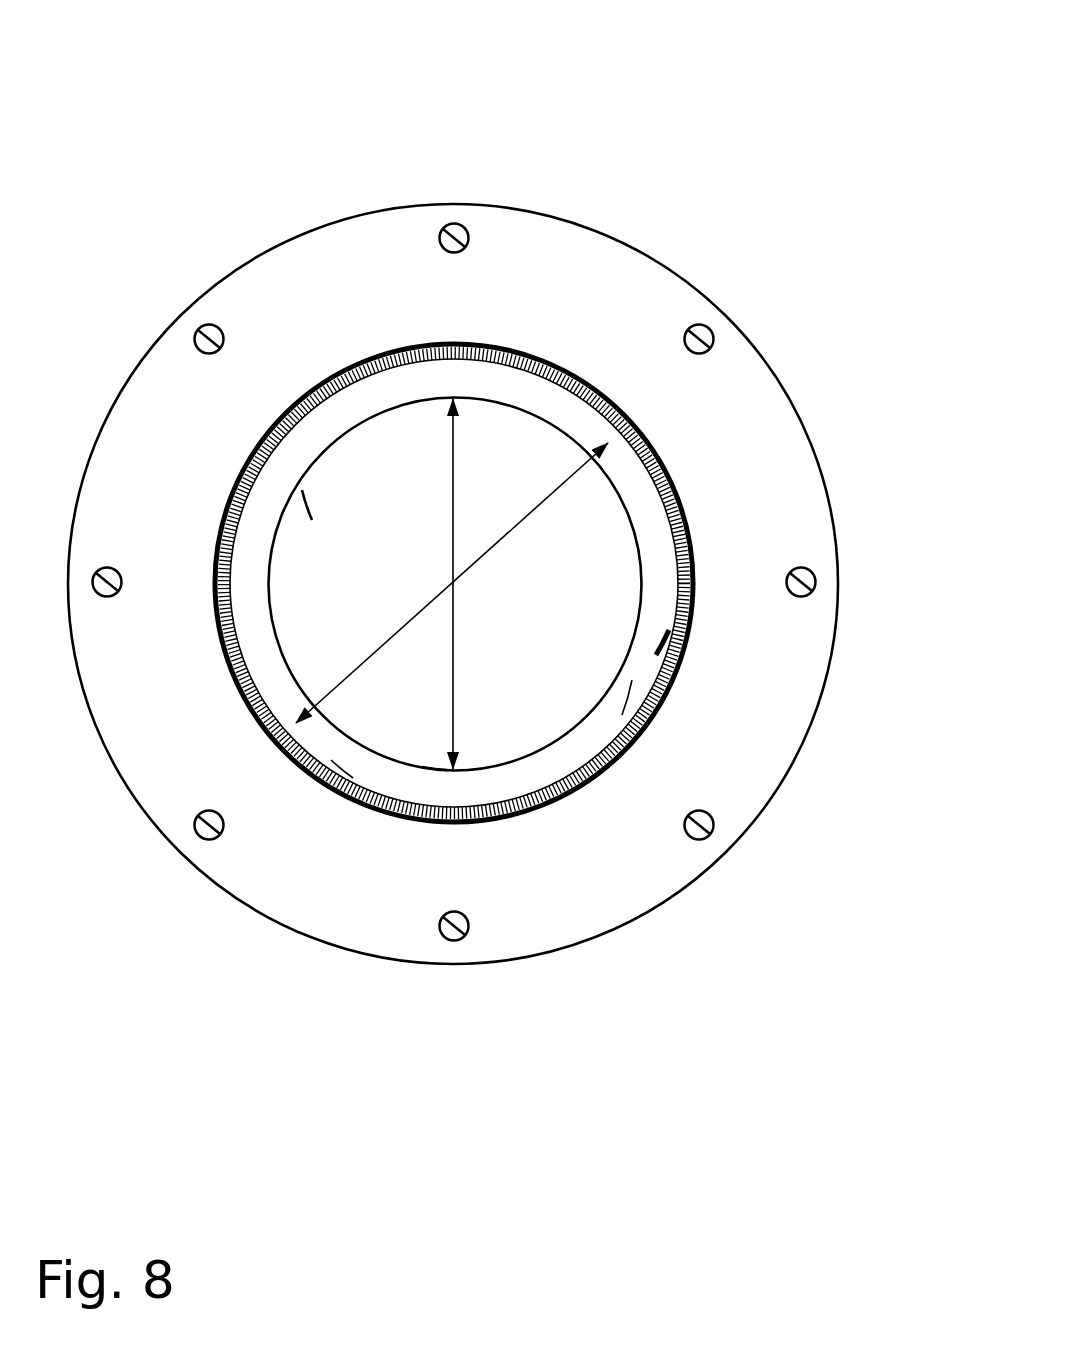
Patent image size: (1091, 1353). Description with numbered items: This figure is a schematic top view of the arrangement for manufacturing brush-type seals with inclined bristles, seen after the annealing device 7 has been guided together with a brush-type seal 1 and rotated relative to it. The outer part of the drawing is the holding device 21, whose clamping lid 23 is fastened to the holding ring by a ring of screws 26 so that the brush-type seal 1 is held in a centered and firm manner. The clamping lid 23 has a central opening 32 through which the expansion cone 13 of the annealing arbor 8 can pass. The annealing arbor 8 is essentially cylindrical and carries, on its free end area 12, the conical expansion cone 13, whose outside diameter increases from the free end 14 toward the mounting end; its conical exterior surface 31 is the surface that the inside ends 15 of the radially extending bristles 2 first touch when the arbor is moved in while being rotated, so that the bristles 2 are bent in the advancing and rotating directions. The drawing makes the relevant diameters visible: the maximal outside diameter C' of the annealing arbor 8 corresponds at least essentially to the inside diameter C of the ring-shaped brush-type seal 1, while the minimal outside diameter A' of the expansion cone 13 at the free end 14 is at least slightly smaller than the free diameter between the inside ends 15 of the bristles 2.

The annealing device 7 is at (450, 531).
The holding device 21 is at (453, 576).
The clamping lid 23 is at (673, 860).
The screws 26 is at (808, 570).
The free end area 12 is at (384, 400).
The annealing arbor 8 is at (513, 445).
The central opening 32 is at (338, 474).
The brush-type seal 1 is at (297, 499).
The expansion cone 13 is at (429, 486).
The inside ends of the bristles 15 is at (636, 696).
The bristles 2 is at (340, 767).
The free end 14 is at (430, 758).
The conical exterior surface 31 is at (657, 640).
The inside diameter of the brush-type seal C is at (550, 558).
The maximal outside diameter of the annealing arbor C' is at (349, 620).
The minimal outside diameter of the expansion cone A' is at (491, 707).